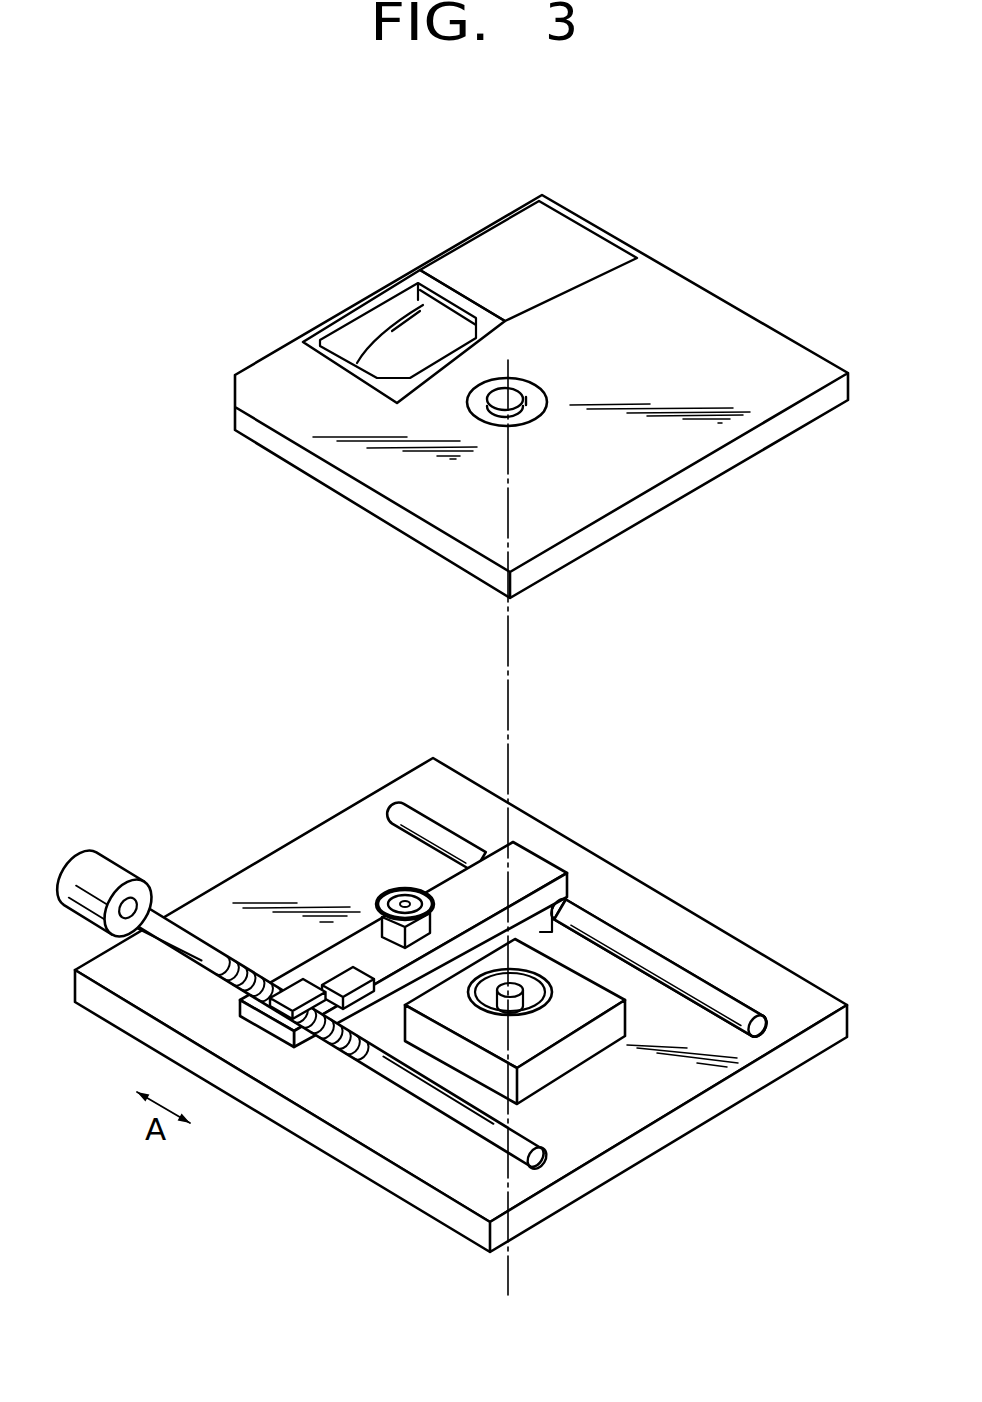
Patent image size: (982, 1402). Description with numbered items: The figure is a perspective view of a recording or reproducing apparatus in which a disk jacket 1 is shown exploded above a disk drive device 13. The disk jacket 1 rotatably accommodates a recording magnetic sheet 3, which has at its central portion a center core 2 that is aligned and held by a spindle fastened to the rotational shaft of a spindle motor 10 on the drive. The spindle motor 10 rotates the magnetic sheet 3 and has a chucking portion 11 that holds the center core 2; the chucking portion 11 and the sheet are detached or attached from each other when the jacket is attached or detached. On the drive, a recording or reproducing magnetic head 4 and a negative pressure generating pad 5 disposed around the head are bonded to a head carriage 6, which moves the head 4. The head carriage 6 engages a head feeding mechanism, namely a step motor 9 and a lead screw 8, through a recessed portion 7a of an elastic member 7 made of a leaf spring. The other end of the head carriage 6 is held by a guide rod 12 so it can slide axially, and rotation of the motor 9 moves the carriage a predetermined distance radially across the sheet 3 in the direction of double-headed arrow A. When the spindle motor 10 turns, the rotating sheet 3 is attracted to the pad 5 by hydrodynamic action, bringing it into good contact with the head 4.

The disk jacket 1 is at (615, 502).
The center core 2 is at (517, 394).
The recording magnetic sheet 3 is at (407, 333).
The magnetic head 4 is at (385, 885).
The negative pressure generating pad 5 is at (386, 892).
The head carriage 6 is at (547, 868).
The elastic member 7 is at (343, 990).
The recessed portion 7a is at (290, 1008).
The lead screw 8 is at (480, 1142).
The step motor 9 is at (125, 869).
The spindle motor 10 is at (613, 1050).
The chucking portion 11 is at (547, 972).
The guide rod 12 is at (717, 993).
The disk drive device 13 is at (130, 1043).